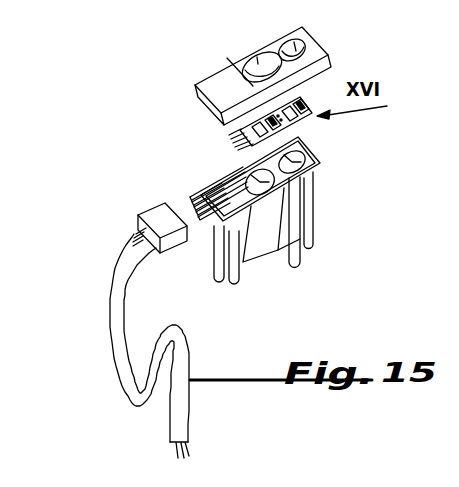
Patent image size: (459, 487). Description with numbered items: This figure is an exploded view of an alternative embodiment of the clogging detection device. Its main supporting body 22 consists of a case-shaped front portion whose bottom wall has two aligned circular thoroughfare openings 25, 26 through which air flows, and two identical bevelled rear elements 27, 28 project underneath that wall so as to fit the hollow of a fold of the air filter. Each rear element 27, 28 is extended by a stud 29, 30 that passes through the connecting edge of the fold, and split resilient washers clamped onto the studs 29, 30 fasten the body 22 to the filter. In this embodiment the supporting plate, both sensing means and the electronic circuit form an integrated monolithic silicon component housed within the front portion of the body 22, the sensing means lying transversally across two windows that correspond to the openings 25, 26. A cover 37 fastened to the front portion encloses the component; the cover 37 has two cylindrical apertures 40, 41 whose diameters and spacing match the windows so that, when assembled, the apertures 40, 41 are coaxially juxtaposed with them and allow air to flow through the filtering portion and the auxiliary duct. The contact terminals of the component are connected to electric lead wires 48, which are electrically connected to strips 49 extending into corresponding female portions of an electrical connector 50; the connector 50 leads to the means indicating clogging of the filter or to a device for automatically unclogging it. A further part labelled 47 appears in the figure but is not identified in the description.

The main supporting body 22 is at (328, 205).
The circular thoroughfare opening 25 is at (238, 171).
The circular thoroughfare opening 26 is at (318, 160).
The rear element 27 is at (218, 230).
The rear element 28 is at (314, 216).
The stud 29 is at (240, 278).
The stud 30 is at (302, 266).
The cover 37 is at (272, 41).
The cylindrical aperture 40 is at (261, 60).
The cylindrical aperture 41 is at (303, 39).
The circuit board 47 is at (316, 129).
The electric lead wires 48 is at (226, 141).
The strips 49 is at (189, 197).
The electrical connector 50 is at (139, 213).